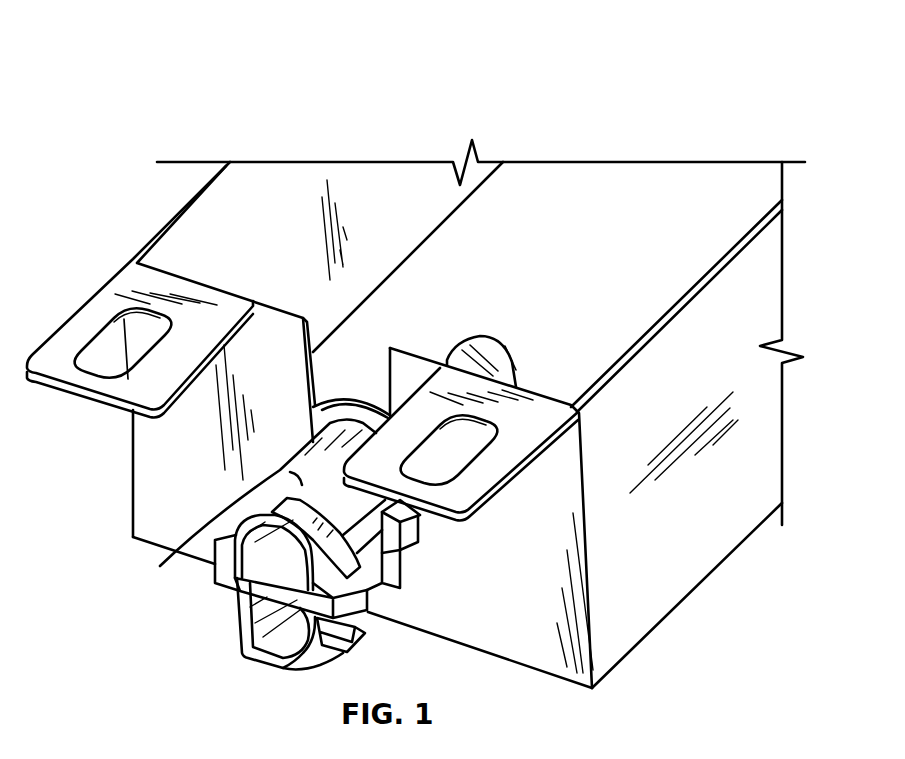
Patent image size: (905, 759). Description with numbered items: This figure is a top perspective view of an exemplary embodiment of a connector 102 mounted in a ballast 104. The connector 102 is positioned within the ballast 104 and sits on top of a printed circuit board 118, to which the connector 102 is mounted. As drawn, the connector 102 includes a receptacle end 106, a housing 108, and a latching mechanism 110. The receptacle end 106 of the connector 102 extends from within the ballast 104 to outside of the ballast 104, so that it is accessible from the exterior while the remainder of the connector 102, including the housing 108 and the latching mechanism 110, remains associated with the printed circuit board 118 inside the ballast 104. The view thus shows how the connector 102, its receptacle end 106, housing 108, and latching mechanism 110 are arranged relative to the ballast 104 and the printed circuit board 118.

The connector 102 is at (118, 52).
The ballast 104 is at (175, 207).
The receptacle end 106 is at (234, 612).
The housing 108 is at (205, 535).
The latching mechanism 110 is at (380, 585).
The printed circuit board 118 is at (742, 203).